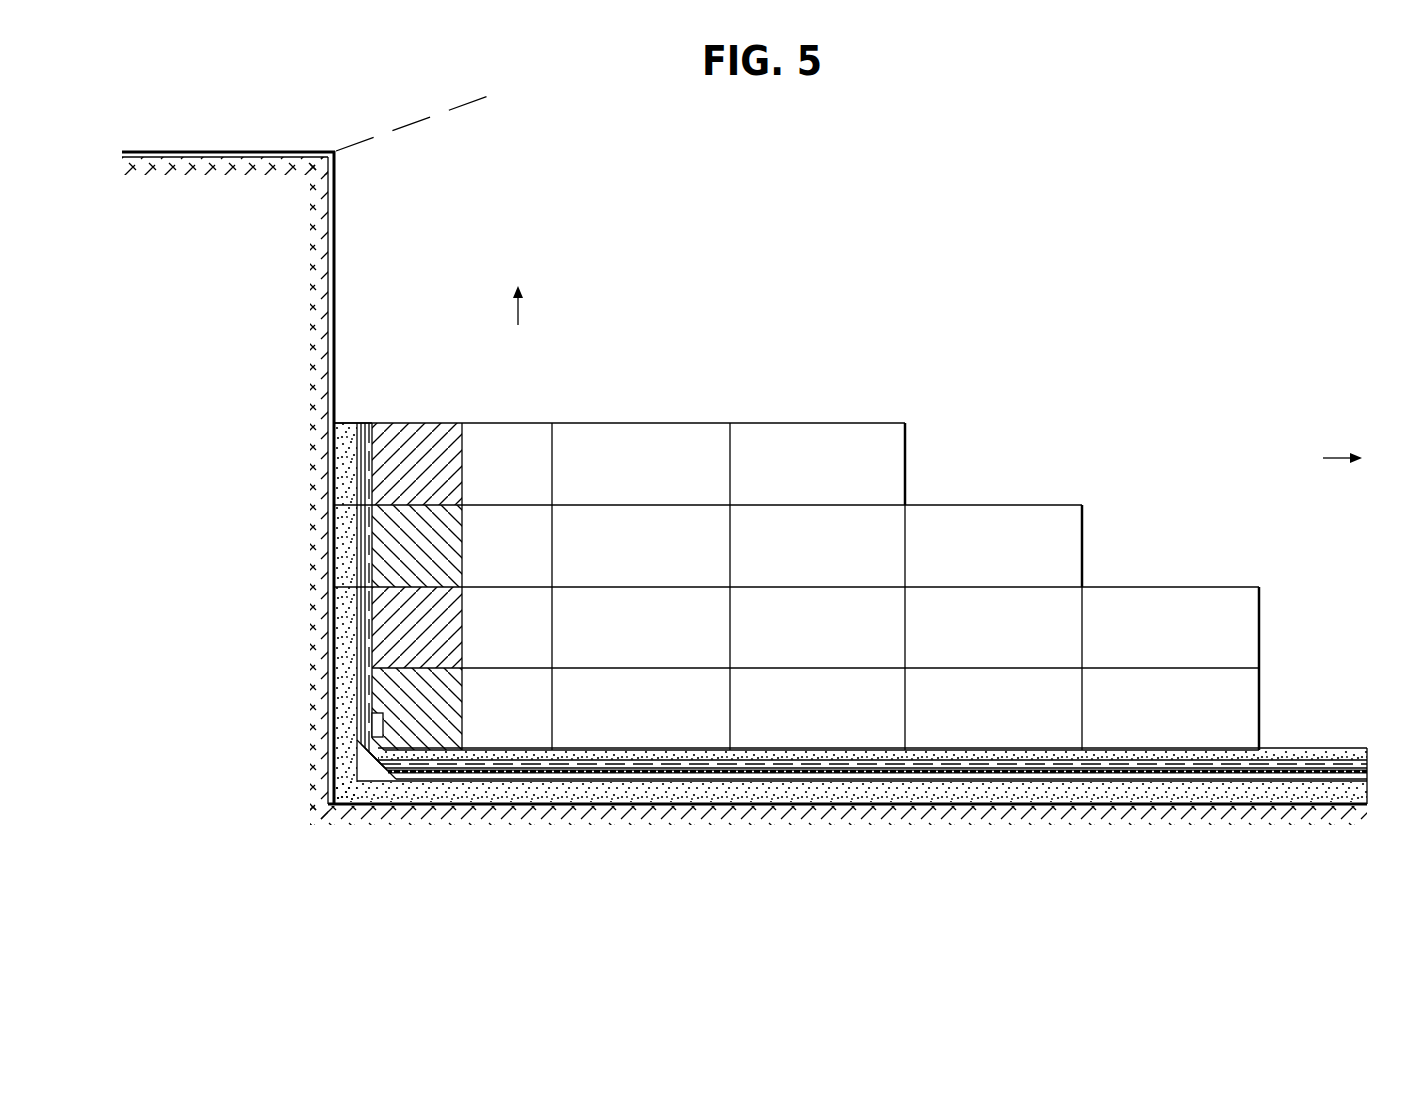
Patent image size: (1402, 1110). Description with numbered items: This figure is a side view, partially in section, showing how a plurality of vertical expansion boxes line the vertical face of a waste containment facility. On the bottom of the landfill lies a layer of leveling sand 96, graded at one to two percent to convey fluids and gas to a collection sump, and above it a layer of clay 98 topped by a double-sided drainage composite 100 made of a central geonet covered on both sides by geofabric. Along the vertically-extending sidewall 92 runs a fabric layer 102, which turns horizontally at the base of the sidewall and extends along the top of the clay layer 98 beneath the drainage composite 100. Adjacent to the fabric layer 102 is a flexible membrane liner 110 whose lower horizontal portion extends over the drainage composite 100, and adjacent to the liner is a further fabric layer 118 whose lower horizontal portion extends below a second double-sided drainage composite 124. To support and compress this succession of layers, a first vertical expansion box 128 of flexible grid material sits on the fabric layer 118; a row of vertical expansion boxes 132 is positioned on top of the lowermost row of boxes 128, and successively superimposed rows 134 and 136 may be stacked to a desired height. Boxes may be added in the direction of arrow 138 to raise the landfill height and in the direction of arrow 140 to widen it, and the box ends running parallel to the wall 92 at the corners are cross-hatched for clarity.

The vertically-extending sidewall 92 is at (341, 206).
The layer of leveling sand 96 is at (1033, 812).
The layer of clay 98 is at (1142, 778).
The double-sided drainage composite 100 is at (368, 750).
The fabric layer 102 is at (360, 516).
The flexible membrane liner 110 is at (1292, 776).
The further fabric layer 118 is at (373, 633).
The second double-sided drainage composite 124 is at (378, 722).
The first vertical expansion box 128 is at (620, 721).
The vertical expansion box 132 is at (620, 641).
The row of vertical expansion boxes 134 is at (620, 559).
The row of vertical expansion boxes 136 is at (620, 478).
The arrow 138 is at (518, 313).
The arrow 140 is at (1332, 458).